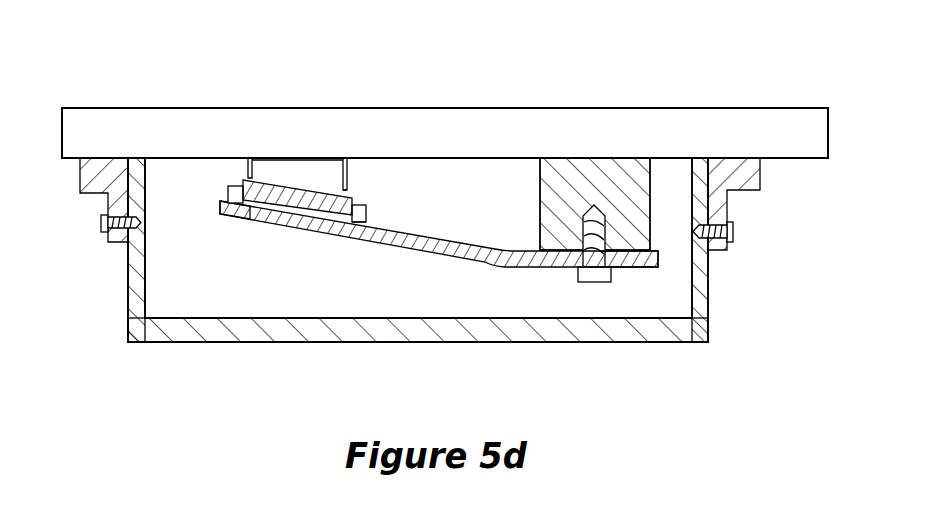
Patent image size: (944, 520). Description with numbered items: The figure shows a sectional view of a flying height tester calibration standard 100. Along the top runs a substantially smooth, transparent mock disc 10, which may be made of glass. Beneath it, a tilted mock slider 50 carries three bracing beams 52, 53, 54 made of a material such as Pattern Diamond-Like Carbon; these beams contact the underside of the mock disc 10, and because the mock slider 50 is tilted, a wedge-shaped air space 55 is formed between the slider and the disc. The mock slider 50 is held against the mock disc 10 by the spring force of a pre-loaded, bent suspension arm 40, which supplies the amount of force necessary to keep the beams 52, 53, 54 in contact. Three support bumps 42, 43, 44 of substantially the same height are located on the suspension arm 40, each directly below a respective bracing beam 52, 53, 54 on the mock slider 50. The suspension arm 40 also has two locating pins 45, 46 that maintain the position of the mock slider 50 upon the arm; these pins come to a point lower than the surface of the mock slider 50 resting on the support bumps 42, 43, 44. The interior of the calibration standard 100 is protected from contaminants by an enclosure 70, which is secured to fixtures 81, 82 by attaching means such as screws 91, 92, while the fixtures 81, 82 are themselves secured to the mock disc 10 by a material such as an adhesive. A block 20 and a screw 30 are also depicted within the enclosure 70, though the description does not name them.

The calibration standard 100 is at (427, 193).
The mock disc 10 is at (372, 121).
The block 20 is at (590, 190).
The screw 30 is at (598, 276).
The suspension arm 40 is at (305, 238).
The support bump 42 is at (346, 222).
The support bump 43 is at (342, 267).
The support bump 44 is at (232, 214).
The locating pin 45 is at (367, 217).
The locating pin 46 is at (233, 197).
The mock slider 50 is at (286, 196).
The bracing beam 52 is at (347, 171).
The bracing beam 53 is at (394, 203).
The bracing beam 54 is at (250, 166).
The wedge-shaped air space 55 is at (297, 172).
The enclosure 70 is at (357, 333).
The fixture 81 is at (748, 175).
The fixture 82 is at (80, 196).
The screw 91 is at (733, 241).
The screw 92 is at (103, 232).